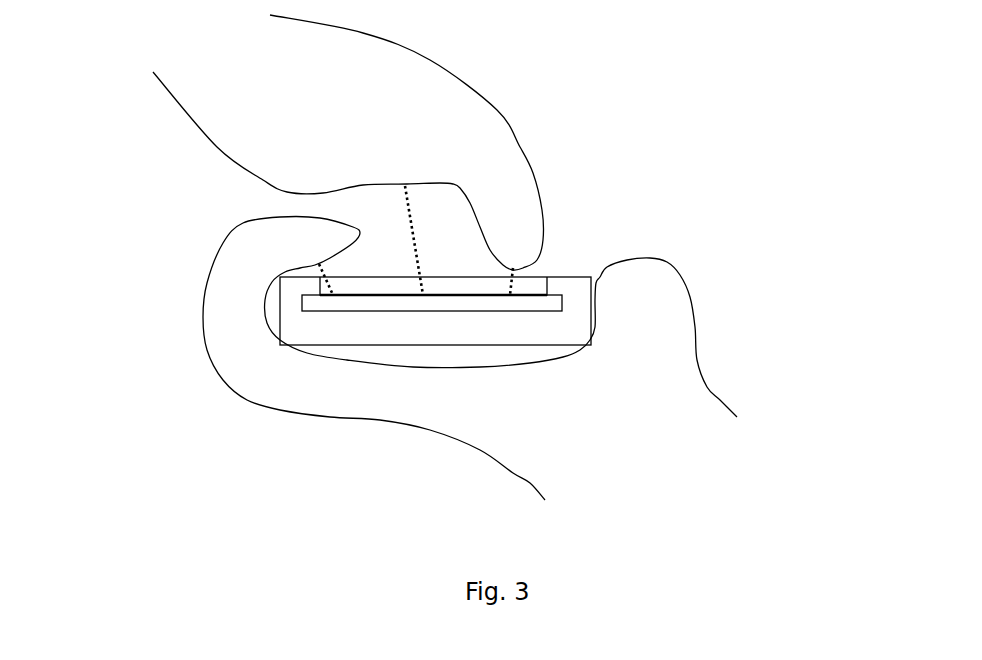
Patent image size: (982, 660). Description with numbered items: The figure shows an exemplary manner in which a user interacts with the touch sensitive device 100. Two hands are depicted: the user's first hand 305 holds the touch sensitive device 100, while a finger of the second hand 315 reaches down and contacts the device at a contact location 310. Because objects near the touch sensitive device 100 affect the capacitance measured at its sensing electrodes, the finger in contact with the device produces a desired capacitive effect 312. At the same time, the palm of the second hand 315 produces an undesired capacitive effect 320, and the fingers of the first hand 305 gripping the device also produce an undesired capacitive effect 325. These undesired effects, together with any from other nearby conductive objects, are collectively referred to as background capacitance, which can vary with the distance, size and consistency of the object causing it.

The touch sensitive device 100 is at (310, 337).
The first hand 305 is at (670, 342).
The contact location 310 is at (515, 268).
The desired capacitive effect 312 is at (526, 284).
The second hand 315 is at (228, 103).
The undesired capacitive effect 320 is at (425, 207).
The undesired capacitive effect 325 is at (315, 266).